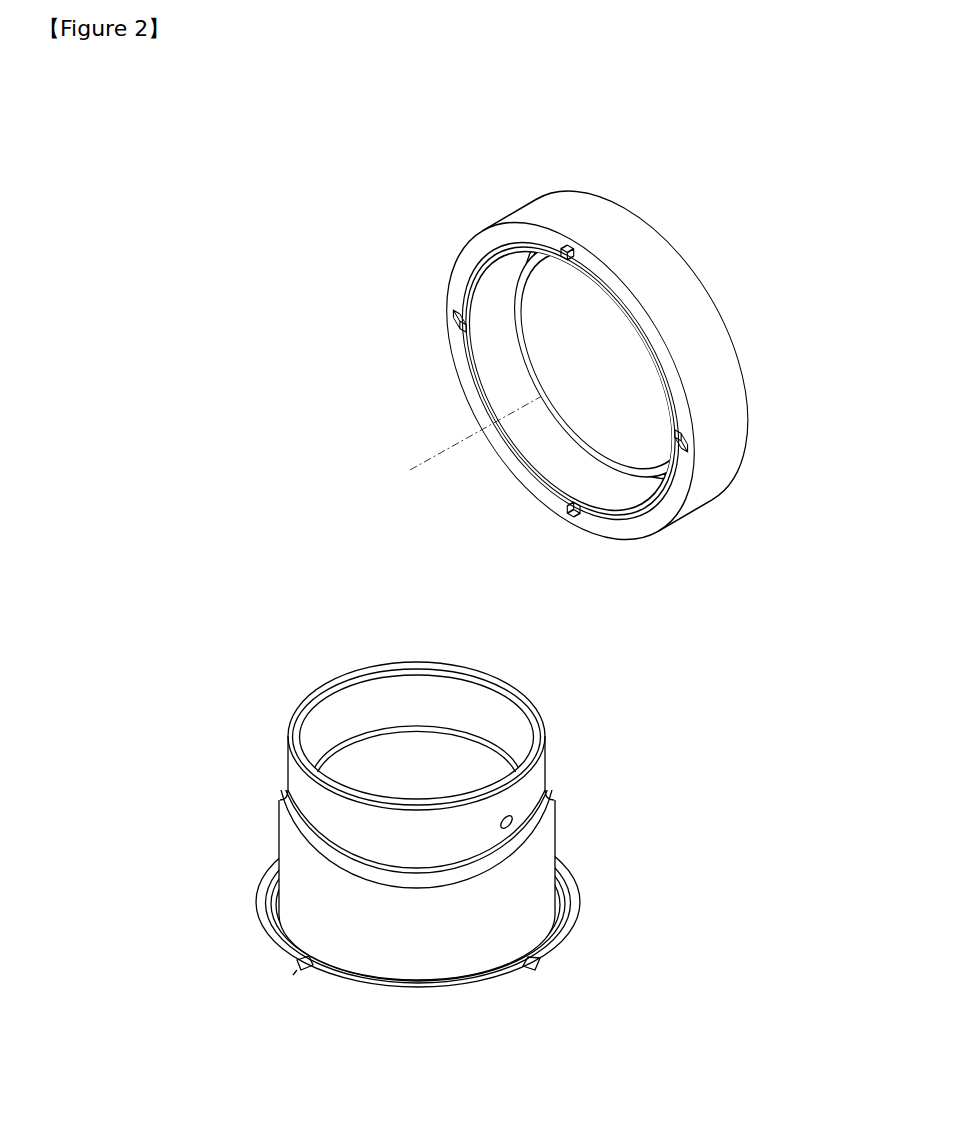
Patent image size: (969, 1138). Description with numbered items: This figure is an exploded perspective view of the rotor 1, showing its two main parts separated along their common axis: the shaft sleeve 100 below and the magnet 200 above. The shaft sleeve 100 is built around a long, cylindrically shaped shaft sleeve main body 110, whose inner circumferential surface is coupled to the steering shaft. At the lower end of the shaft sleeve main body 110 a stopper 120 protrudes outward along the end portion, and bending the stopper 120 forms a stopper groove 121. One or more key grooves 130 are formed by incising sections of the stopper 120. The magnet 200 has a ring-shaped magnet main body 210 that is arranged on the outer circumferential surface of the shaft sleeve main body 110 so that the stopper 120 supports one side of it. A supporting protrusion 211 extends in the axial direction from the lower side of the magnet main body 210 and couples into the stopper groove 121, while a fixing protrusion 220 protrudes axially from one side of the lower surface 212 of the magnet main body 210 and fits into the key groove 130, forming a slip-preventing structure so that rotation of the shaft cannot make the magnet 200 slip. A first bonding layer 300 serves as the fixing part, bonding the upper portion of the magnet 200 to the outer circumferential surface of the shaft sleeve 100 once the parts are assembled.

The rotor 1 is at (147, 137).
The shaft sleeve 100 is at (512, 1020).
The shaft sleeve main body 110 is at (540, 874).
The stopper 120 is at (572, 903).
The stopper groove 121 is at (563, 932).
The key groove 130 is at (305, 970).
The magnet 200 is at (710, 545).
The magnet main body 210 is at (735, 440).
The supporting protrusion 211 is at (480, 258).
The lower surface 212 is at (526, 480).
The fixing protrusion 220 is at (571, 243).
The first bonding layer 300 is at (543, 377).